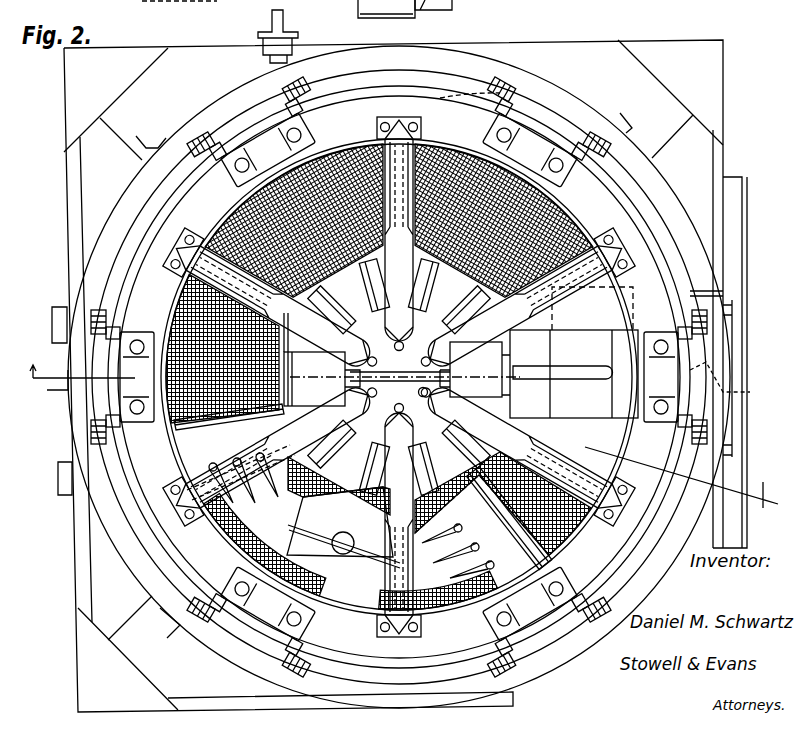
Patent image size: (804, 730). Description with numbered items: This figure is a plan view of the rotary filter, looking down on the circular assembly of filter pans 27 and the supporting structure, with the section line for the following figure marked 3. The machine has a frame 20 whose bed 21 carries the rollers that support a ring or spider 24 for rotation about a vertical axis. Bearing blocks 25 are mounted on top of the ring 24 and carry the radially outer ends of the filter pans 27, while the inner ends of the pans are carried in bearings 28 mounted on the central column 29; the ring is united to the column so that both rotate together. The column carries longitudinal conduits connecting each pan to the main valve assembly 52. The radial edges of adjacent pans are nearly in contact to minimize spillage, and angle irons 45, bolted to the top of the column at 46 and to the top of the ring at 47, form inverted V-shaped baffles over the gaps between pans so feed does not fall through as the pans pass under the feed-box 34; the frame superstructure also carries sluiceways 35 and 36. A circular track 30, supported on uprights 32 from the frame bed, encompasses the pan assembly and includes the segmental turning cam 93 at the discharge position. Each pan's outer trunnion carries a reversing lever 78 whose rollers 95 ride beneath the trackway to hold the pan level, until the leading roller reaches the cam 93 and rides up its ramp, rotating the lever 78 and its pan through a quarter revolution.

The frame 20 is at (728, 93).
The bed 21 is at (500, 0).
The ring or spider 24 is at (617, 562).
The bearing blocks 25 is at (141, 335).
The filter pans 27 is at (563, 208).
The bearings 28 is at (507, 353).
The central column 29 is at (405, 376).
The circular track 30 is at (228, 647).
The uprights 32 is at (148, 143).
The feed-box 34 is at (336, 524).
The sluiceway 35 is at (504, 556).
The sluiceway 36 is at (276, 524).
The angle irons 45 is at (322, 345).
The bolted connection at top of central column 46 is at (418, 392).
The bolted connection at top of ring 47 is at (613, 520).
The main valve assembly 52 is at (358, 15).
The reversing lever 78 is at (537, 120).
The segmental turning cam 93 is at (718, 352).
The rollers 95 is at (477, 83).
The section line 3 is at (399, 409).